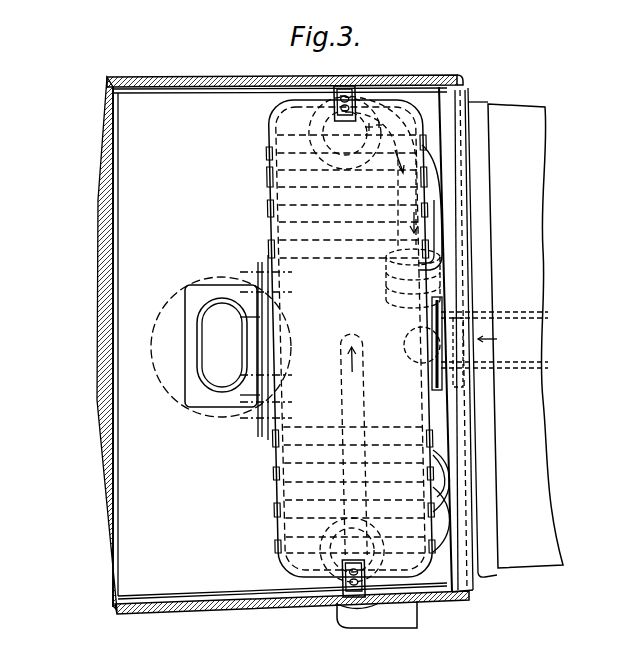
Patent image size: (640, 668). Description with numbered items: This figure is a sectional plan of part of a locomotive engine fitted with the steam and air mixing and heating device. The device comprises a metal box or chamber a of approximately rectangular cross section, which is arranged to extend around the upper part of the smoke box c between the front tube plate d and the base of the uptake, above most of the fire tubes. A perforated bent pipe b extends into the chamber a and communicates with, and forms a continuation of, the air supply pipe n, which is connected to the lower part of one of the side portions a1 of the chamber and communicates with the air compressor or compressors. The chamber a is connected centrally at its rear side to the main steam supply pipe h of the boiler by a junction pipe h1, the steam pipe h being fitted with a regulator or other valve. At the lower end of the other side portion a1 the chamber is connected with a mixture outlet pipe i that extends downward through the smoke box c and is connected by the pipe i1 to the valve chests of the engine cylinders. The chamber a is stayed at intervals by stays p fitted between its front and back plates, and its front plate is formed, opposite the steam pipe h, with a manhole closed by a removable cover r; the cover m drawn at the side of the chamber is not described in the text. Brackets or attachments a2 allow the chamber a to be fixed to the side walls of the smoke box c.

The metal box or chamber a is at (350, 338).
The side portions of chamber a1 is at (266, 135).
The brackets or attachments a2 is at (345, 90).
The perforated bent pipe b is at (333, 450).
The smoke box c is at (181, 93).
The front tube plate d is at (467, 437).
The main steam supply pipe h is at (502, 336).
The junction pipe h1 is at (432, 356).
The mixture outlet pipe i is at (500, 163).
The pipe i1 is at (443, 310).
The door m is at (221, 347).
The air supply pipe n is at (393, 563).
The stays p is at (342, 250).
The removable cover r is at (259, 432).